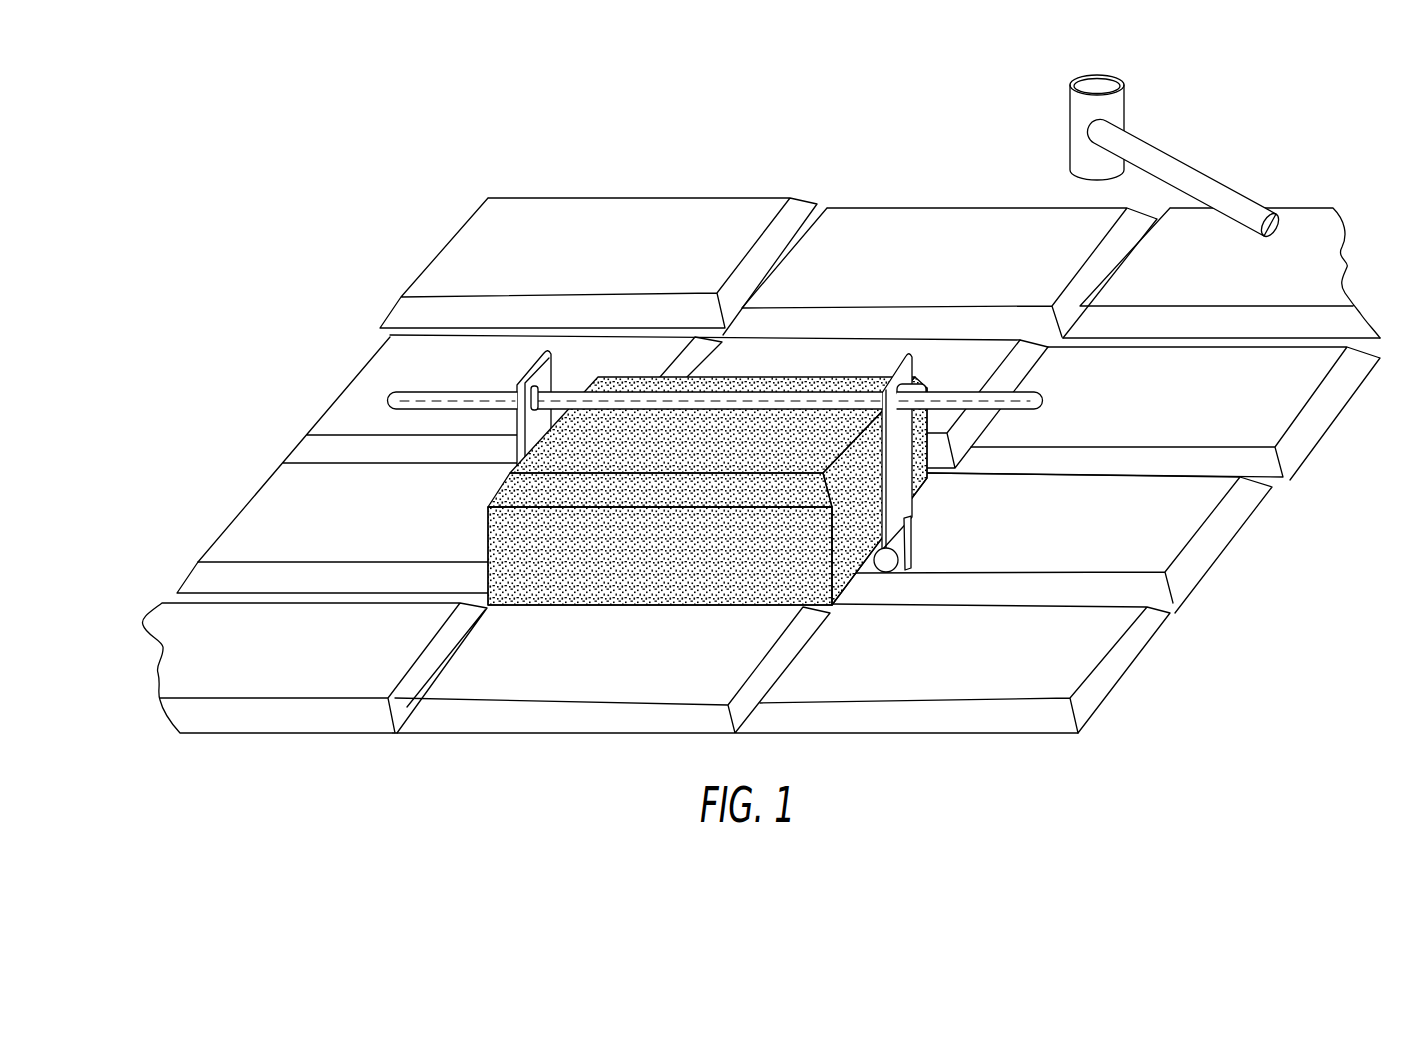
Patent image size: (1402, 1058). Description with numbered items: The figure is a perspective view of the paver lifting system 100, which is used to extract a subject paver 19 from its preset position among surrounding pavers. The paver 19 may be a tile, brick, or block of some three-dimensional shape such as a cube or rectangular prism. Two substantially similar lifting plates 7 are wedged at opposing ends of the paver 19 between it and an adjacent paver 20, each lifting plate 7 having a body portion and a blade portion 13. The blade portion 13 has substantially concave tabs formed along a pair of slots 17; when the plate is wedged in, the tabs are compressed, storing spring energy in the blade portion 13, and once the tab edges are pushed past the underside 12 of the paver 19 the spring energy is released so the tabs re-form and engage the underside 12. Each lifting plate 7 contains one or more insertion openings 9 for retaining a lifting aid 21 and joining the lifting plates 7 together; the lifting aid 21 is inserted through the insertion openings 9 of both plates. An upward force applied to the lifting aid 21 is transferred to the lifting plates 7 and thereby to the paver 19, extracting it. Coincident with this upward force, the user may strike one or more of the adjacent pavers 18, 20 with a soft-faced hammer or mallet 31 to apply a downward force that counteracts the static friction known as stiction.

The paver lifting system 100 is at (761, 431).
The lifting plate 7 is at (543, 377).
The insertion opening 9 is at (905, 384).
The underside 12 is at (591, 608).
The blade portion 13 is at (904, 567).
The slot 17 is at (905, 530).
The adjacent paver 18 is at (1195, 408).
The paver 19 is at (674, 568).
The adjacent paver 20 is at (388, 523).
The lifting aid 21 is at (1043, 401).
The soft-faced hammer or mallet 31 is at (1168, 160).